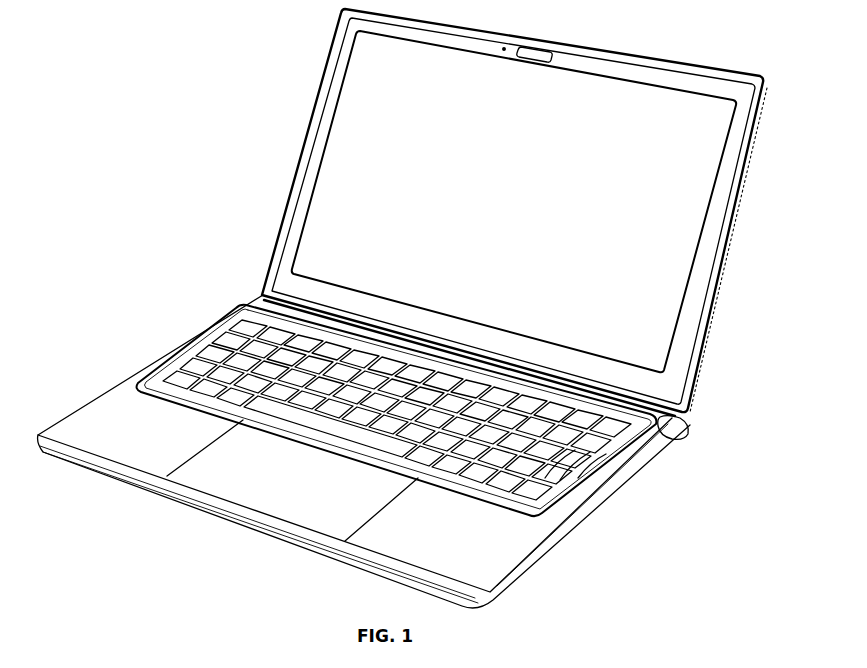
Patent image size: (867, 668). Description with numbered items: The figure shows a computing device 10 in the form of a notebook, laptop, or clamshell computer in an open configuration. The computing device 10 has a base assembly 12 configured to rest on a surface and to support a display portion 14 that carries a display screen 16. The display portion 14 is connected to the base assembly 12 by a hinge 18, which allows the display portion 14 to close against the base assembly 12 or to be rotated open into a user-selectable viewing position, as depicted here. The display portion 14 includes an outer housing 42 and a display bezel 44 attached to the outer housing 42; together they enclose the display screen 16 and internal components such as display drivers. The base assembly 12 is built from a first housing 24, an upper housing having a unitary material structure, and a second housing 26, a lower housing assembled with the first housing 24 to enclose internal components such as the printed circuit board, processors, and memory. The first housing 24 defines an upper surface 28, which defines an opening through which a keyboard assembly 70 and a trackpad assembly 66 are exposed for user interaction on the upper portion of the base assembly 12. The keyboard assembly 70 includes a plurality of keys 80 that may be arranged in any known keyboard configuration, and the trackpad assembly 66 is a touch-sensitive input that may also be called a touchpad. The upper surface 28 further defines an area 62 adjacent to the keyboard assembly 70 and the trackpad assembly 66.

The computing device 10 is at (195, 72).
The base assembly 12 is at (128, 345).
The display portion 14 is at (268, 184).
The display screen 16 is at (514, 193).
The hinge 18 is at (262, 293).
The first housing 24 is at (90, 400).
The second housing 26 is at (470, 604).
The upper surface 28 is at (197, 338).
The outer housing 42 is at (713, 313).
The display bezel 44 is at (702, 267).
The area 62 is at (183, 440).
The trackpad assembly 66 is at (283, 490).
The keyboard assembly 70 is at (237, 314).
The keys 80 is at (594, 467).